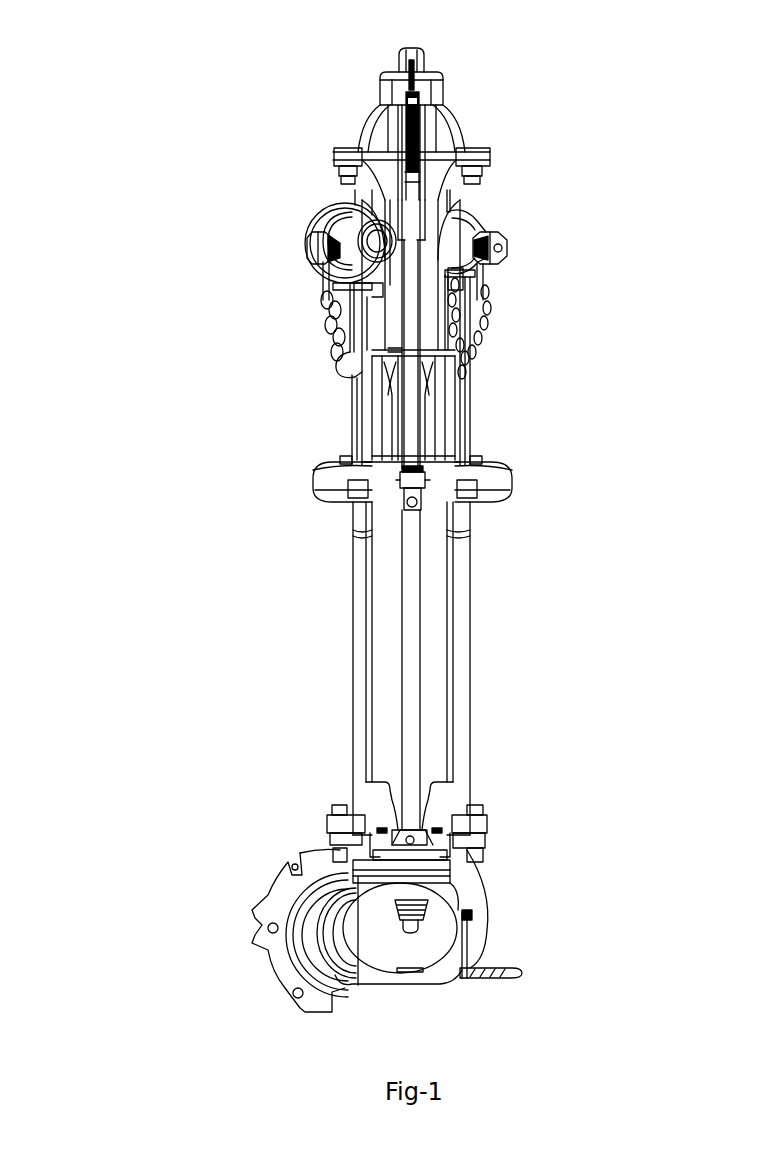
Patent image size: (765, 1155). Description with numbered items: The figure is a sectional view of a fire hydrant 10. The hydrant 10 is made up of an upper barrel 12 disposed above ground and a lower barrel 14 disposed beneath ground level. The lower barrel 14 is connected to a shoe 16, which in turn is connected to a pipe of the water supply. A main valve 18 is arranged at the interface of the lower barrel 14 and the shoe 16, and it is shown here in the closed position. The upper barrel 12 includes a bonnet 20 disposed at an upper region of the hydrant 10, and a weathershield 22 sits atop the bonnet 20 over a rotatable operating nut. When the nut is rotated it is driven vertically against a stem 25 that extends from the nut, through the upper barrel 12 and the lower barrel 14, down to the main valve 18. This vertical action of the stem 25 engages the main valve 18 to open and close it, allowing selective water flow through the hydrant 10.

The hydrant 10 is at (212, 166).
The upper barrel 12 is at (482, 421).
The lower barrel 14 is at (480, 647).
The shoe 16 is at (264, 881).
The main valve 18 is at (426, 888).
The bonnet 20 is at (466, 115).
The weathershield 22 is at (457, 68).
The stem 25 is at (393, 304).